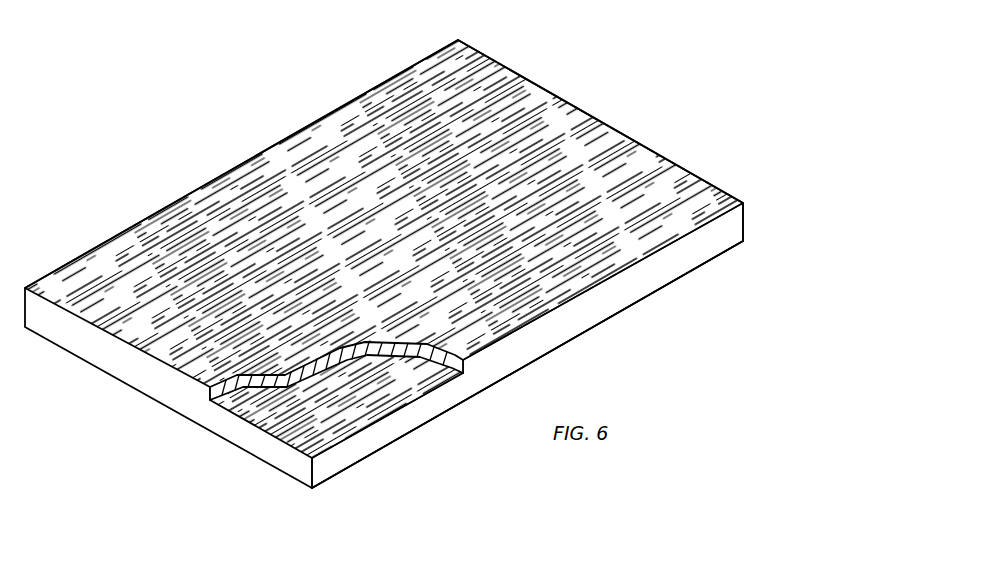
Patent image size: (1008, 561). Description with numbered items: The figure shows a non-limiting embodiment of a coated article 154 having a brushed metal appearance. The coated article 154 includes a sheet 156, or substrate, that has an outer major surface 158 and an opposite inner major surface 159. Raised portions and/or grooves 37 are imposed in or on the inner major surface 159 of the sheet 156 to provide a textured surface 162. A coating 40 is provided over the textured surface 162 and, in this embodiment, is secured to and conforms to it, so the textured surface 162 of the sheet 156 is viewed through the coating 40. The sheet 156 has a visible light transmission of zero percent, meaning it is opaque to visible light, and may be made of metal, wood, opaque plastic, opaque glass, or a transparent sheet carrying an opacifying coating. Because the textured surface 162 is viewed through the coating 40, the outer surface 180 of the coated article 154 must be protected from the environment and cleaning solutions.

The coated article 154 is at (624, 67).
The coating 40 is at (524, 97).
The outer surface 180 is at (153, 228).
The sheet 156 is at (650, 279).
The outer major surface 158 is at (594, 328).
The inner major surface 159 is at (250, 418).
The textured surface 162 is at (414, 383).
The raised portions and/or grooves 37 is at (347, 433).